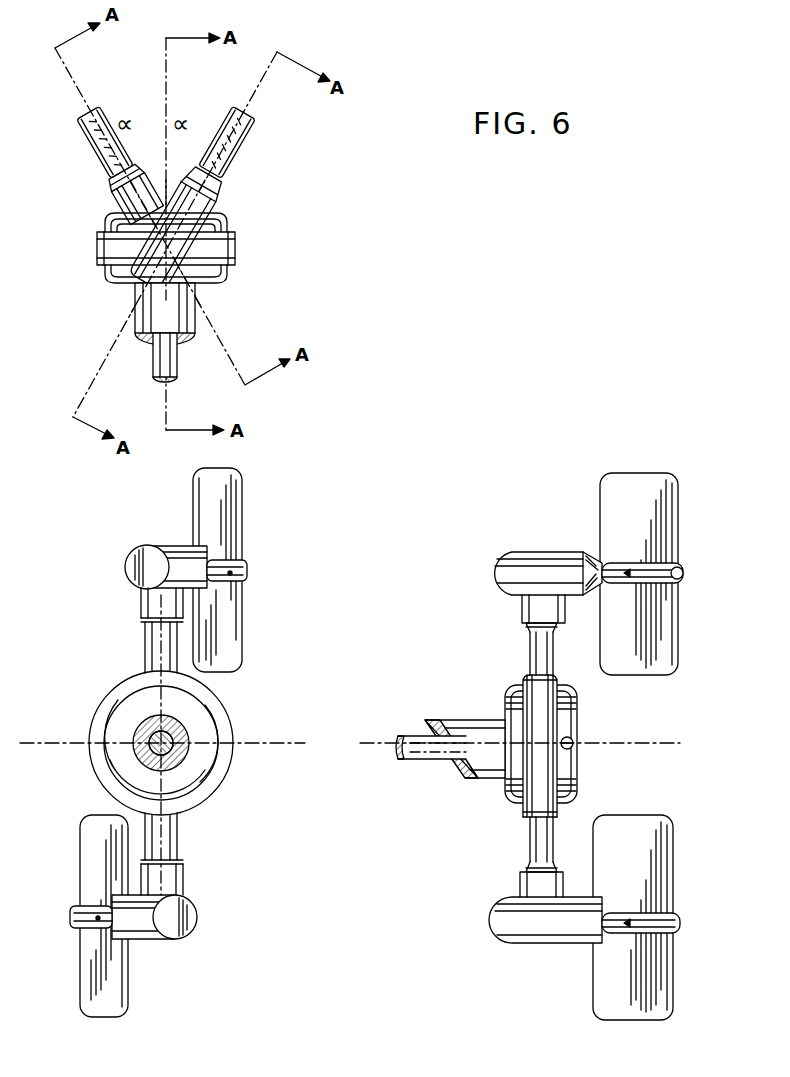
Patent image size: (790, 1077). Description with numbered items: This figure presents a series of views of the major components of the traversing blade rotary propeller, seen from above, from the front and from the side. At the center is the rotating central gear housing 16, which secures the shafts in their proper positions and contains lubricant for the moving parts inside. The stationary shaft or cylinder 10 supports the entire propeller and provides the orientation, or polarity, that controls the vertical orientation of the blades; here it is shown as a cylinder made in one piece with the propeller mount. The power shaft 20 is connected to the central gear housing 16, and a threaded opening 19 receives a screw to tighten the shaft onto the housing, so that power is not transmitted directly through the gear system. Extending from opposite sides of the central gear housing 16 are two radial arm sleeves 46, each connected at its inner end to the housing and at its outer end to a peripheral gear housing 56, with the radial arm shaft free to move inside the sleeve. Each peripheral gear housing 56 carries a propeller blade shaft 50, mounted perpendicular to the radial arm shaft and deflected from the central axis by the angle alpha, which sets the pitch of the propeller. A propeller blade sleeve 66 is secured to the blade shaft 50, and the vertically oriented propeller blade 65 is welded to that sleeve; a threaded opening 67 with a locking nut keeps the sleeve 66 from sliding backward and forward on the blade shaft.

The stationary shaft or cylinder 10 is at (485, 718).
The central gear housing 16 is at (579, 706).
The threaded opening with screw 19 is at (573, 746).
The power shaft or cylinder 20 is at (428, 762).
The radial arm sleeve 46 is at (530, 838).
The propeller blade shaft 50 is at (684, 574).
The peripheral gear housing 56 is at (490, 925).
The propeller blade 65 is at (672, 998).
The propeller blade sleeve 66 is at (678, 915).
The threaded opening with screw 67 is at (627, 920).